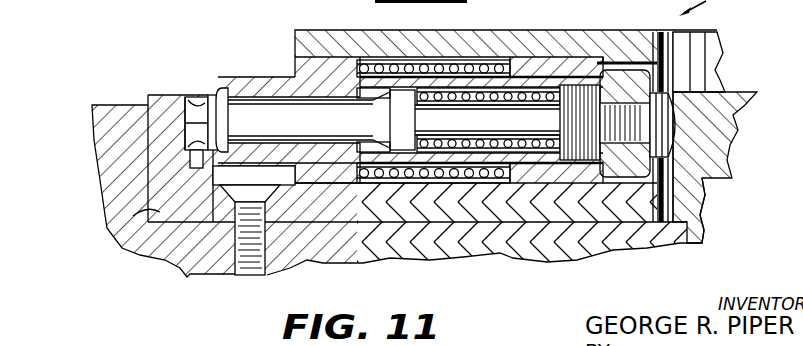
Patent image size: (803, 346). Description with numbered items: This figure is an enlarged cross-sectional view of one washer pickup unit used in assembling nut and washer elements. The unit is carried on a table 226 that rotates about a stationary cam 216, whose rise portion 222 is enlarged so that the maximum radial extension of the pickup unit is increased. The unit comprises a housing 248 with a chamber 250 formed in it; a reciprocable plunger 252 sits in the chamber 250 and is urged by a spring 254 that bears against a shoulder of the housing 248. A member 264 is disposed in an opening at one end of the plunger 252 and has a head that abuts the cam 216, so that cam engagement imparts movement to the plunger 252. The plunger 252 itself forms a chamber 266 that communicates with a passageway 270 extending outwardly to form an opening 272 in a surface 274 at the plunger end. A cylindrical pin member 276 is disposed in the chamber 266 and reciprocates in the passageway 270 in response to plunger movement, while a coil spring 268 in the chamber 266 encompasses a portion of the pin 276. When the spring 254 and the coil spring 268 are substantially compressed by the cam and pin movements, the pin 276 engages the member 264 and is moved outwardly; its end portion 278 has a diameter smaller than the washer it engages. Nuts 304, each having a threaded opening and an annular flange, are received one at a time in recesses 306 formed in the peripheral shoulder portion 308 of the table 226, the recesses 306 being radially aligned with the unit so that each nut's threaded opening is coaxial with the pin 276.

The stationary cam 216 is at (735, 140).
The rise portion 222 is at (687, 192).
The table 226 is at (378, 258).
The housing 248 is at (506, 37).
The chamber 250 is at (412, 58).
The reciprocable plunger 252 is at (572, 65).
The spring 254 is at (451, 57).
The member 264 is at (671, 88).
The chamber 266 is at (573, 184).
The coil spring 268 is at (525, 184).
The passageway 270 is at (277, 77).
The opening 272 is at (224, 140).
The surface 274 is at (213, 92).
The pin member 276 is at (394, 120).
The end portion 278 is at (207, 95).
The nut 304 is at (200, 103).
The recess 306 is at (185, 110).
The peripheral shoulder portion 308 is at (123, 233).